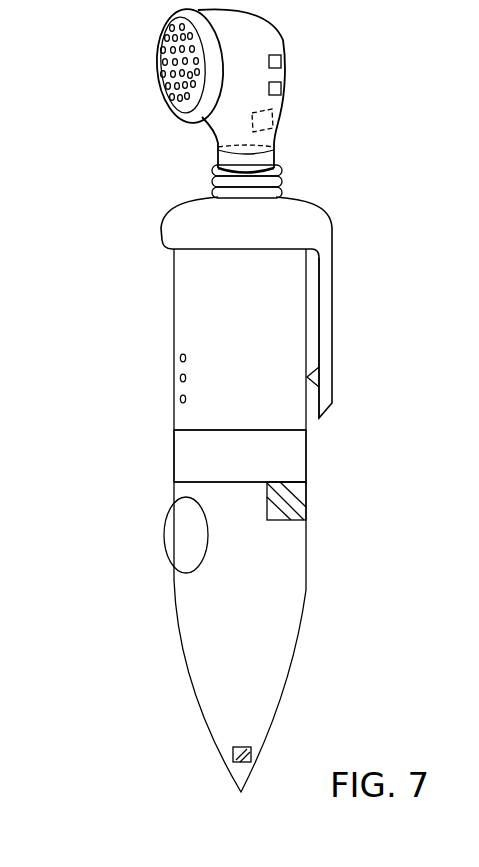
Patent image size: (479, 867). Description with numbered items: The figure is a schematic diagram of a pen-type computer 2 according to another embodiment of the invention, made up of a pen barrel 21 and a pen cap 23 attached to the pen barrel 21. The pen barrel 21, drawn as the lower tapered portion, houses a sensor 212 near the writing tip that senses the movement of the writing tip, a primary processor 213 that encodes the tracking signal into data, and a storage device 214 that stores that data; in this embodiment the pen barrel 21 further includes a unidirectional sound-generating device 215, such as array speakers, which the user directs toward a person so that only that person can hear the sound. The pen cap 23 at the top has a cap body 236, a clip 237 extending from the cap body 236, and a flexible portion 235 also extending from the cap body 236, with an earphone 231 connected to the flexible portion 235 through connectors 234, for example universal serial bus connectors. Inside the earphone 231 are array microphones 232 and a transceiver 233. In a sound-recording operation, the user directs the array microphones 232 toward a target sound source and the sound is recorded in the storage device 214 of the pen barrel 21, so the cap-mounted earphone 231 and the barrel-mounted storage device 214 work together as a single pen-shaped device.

The pen-type computer 2 is at (77, 39).
The pen barrel 21 is at (88, 378).
The sensor 212 is at (235, 753).
The primary processor 213 is at (276, 503).
The storage device 214 is at (200, 455).
The unidirectional sound-generating device 215 is at (183, 378).
The pen cap 23 is at (419, 35).
The earphone 231 is at (195, 33).
The array microphones 232 is at (281, 61).
The transceiver 233 is at (273, 118).
The connectors 234 is at (277, 161).
The flexible portion 235 is at (278, 184).
The cap body 236 is at (313, 227).
The clip 237 is at (325, 300).